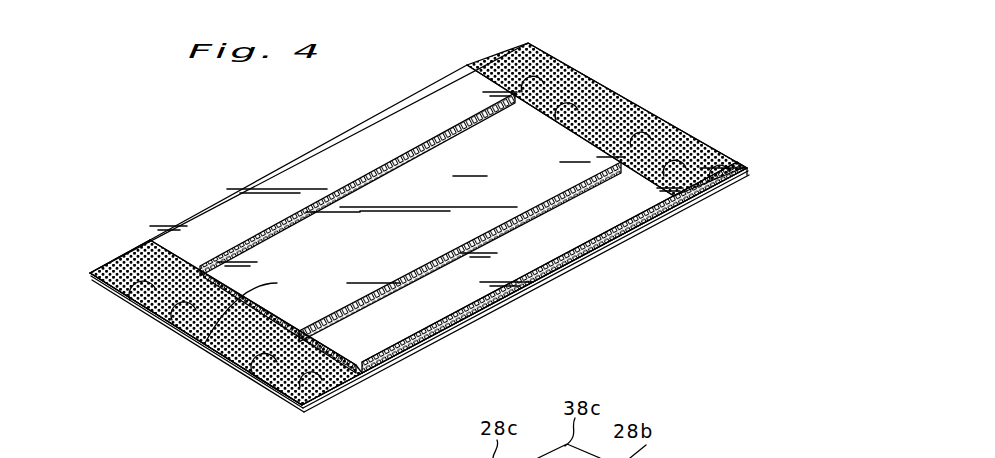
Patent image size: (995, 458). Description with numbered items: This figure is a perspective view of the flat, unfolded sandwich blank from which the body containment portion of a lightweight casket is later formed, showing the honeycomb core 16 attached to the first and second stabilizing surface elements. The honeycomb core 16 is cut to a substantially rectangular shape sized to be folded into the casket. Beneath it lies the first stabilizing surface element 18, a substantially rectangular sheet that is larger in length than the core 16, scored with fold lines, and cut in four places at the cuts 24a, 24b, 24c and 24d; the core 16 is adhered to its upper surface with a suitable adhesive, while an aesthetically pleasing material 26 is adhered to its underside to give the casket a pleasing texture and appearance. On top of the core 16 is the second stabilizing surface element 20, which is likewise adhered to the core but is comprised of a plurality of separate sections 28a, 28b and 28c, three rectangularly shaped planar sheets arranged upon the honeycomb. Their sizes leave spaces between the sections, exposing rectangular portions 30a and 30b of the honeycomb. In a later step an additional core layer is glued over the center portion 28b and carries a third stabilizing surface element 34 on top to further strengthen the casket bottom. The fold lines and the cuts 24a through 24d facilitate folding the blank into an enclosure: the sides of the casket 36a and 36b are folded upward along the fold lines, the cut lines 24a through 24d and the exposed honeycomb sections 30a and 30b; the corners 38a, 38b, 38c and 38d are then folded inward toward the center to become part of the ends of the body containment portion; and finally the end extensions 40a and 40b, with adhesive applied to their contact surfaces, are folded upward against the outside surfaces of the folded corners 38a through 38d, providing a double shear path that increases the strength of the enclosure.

The honeycomb core 16 is at (528, 290).
The first stabilizing surface element 18 is at (437, 341).
The second stabilizing surface element 20 is at (328, 162).
The cut 24a is at (574, 98).
The cut 24b is at (686, 138).
The cut 24c is at (252, 366).
The cut 24d is at (132, 306).
The aesthetically pleasing material 26 is at (347, 390).
The section of second stabilizing surface element 28a is at (586, 228).
The center portion of second stabilizing surface element 28b is at (545, 145).
The section of second stabilizing surface element 28c is at (433, 90).
The rectangular portion of exposed honeycomb 30a is at (640, 193).
The rectangular portion of exposed honeycomb 30b is at (538, 86).
The third stabilizing surface element 34 is at (205, 343).
The side of the casket 36a is at (280, 396).
The side of the casket 36b is at (100, 292).
The corner 38a is at (303, 404).
The corner 38b is at (722, 182).
The corner 38c is at (511, 66).
The corner 38d is at (132, 260).
The end extension 40a is at (190, 322).
The end extension 40b is at (640, 137).